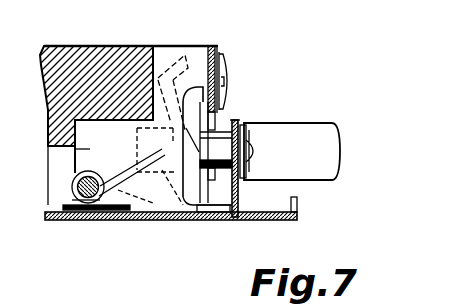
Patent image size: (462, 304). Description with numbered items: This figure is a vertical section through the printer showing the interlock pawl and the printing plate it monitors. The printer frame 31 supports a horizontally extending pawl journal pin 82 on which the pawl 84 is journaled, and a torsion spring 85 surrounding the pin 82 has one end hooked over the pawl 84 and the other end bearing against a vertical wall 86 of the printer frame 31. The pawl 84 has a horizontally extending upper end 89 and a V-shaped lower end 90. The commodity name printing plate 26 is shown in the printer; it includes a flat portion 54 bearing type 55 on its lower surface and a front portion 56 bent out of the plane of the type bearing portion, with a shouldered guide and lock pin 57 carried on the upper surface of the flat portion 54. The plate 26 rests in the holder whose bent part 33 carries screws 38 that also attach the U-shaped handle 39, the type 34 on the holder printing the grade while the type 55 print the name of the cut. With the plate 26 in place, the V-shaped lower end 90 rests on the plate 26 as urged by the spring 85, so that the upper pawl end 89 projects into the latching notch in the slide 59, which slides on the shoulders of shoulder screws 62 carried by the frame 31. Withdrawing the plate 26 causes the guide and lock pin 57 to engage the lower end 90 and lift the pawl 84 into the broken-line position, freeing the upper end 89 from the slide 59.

The printer frame 31 is at (84, 45).
The vertical wall 86 is at (75, 119).
The slide 59 is at (218, 47).
The shoulder screw 62 is at (228, 70).
The upper end 89 is at (203, 86).
The pawl 84 is at (190, 148).
The torsion spring 85 is at (121, 177).
The pawl journal pin 82 is at (74, 182).
The guide and lock pin 57 is at (72, 200).
The type 55 is at (95, 222).
The flat portion 54 is at (258, 221).
The front portion 56 is at (298, 205).
The printing type 34 is at (63, 221).
The V-shaped lower end 90 is at (175, 221).
The commodity name printing plate 26 is at (297, 221).
The bent part 33 is at (239, 200).
The screw 38 is at (258, 152).
The handle 39 is at (337, 170).